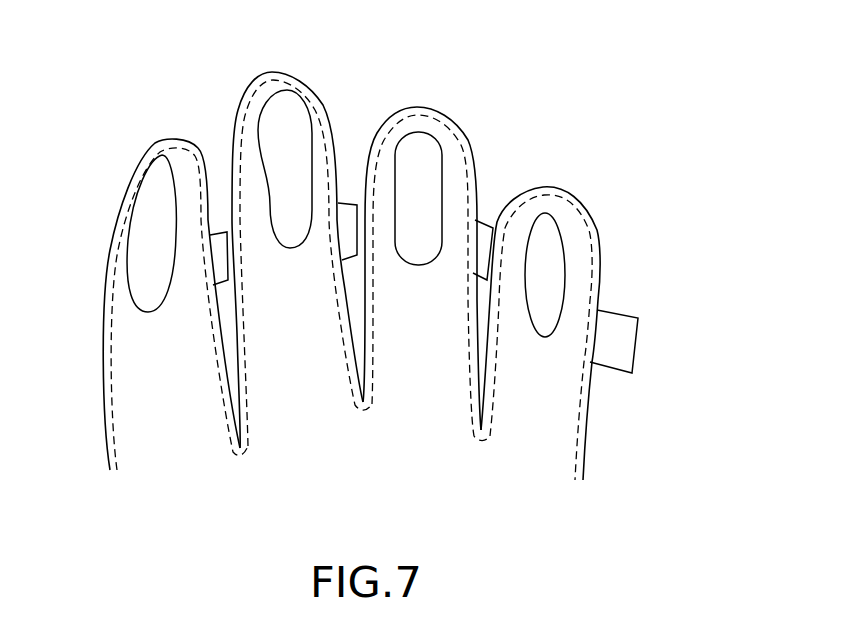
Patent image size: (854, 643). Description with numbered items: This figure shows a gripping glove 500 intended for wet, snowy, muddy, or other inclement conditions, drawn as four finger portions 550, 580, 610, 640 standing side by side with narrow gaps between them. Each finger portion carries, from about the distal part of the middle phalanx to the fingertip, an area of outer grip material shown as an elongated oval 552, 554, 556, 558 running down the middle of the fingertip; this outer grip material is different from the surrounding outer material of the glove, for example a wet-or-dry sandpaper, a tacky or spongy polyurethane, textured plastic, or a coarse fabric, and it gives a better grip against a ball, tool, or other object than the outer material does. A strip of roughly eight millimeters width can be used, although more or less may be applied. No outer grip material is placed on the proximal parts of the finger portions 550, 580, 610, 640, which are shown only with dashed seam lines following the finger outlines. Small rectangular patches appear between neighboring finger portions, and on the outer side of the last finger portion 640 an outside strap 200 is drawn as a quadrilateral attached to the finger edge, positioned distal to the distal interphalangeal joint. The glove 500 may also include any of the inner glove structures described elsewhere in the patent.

The glove 500 is at (384, 244).
The first finger portion 550 is at (145, 272).
The first finger opening 552 is at (145, 257).
The second finger portion 580 is at (302, 228).
The second finger opening 554 is at (297, 122).
The third finger portion 610 is at (434, 241).
The third finger opening 556 is at (430, 148).
The fourth finger portion 640 is at (568, 311).
The fourth finger opening 558 is at (553, 248).
The outside strap 200 is at (627, 335).